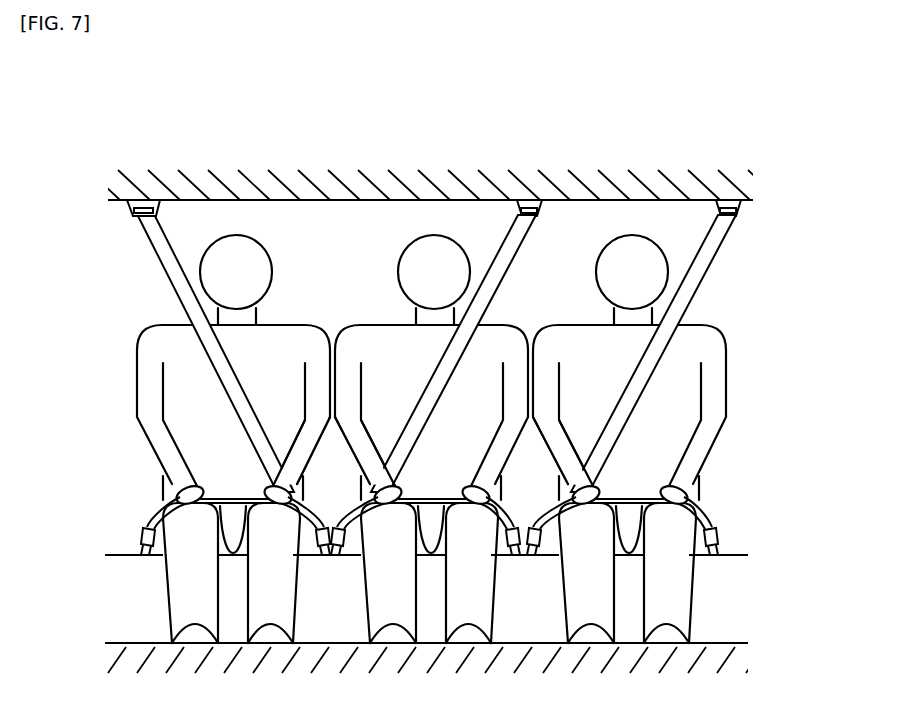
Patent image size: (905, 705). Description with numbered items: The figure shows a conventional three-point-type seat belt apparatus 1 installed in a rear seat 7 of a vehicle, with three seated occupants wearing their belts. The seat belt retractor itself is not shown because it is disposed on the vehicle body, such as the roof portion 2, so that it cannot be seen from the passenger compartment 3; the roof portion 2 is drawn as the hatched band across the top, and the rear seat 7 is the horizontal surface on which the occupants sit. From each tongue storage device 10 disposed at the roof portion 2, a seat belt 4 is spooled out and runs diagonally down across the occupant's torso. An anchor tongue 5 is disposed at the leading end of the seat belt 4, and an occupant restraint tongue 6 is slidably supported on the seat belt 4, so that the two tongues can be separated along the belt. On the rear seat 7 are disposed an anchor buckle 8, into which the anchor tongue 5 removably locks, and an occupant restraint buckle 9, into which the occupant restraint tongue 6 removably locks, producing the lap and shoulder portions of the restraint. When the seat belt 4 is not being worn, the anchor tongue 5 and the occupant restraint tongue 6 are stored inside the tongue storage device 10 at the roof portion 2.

The seat belt apparatus 1 is at (166, 307).
The roof portion 2 is at (383, 192).
The passenger compartment 3 is at (338, 257).
The seat belt 4 is at (175, 272).
The anchor tongue 5 is at (155, 528).
The occupant restraint tongue 6 is at (331, 522).
The rear seat 7 is at (745, 553).
The anchor buckle 8 is at (143, 545).
The occupant restraint buckle 9 is at (344, 559).
The tongue storage device 10 is at (131, 211).